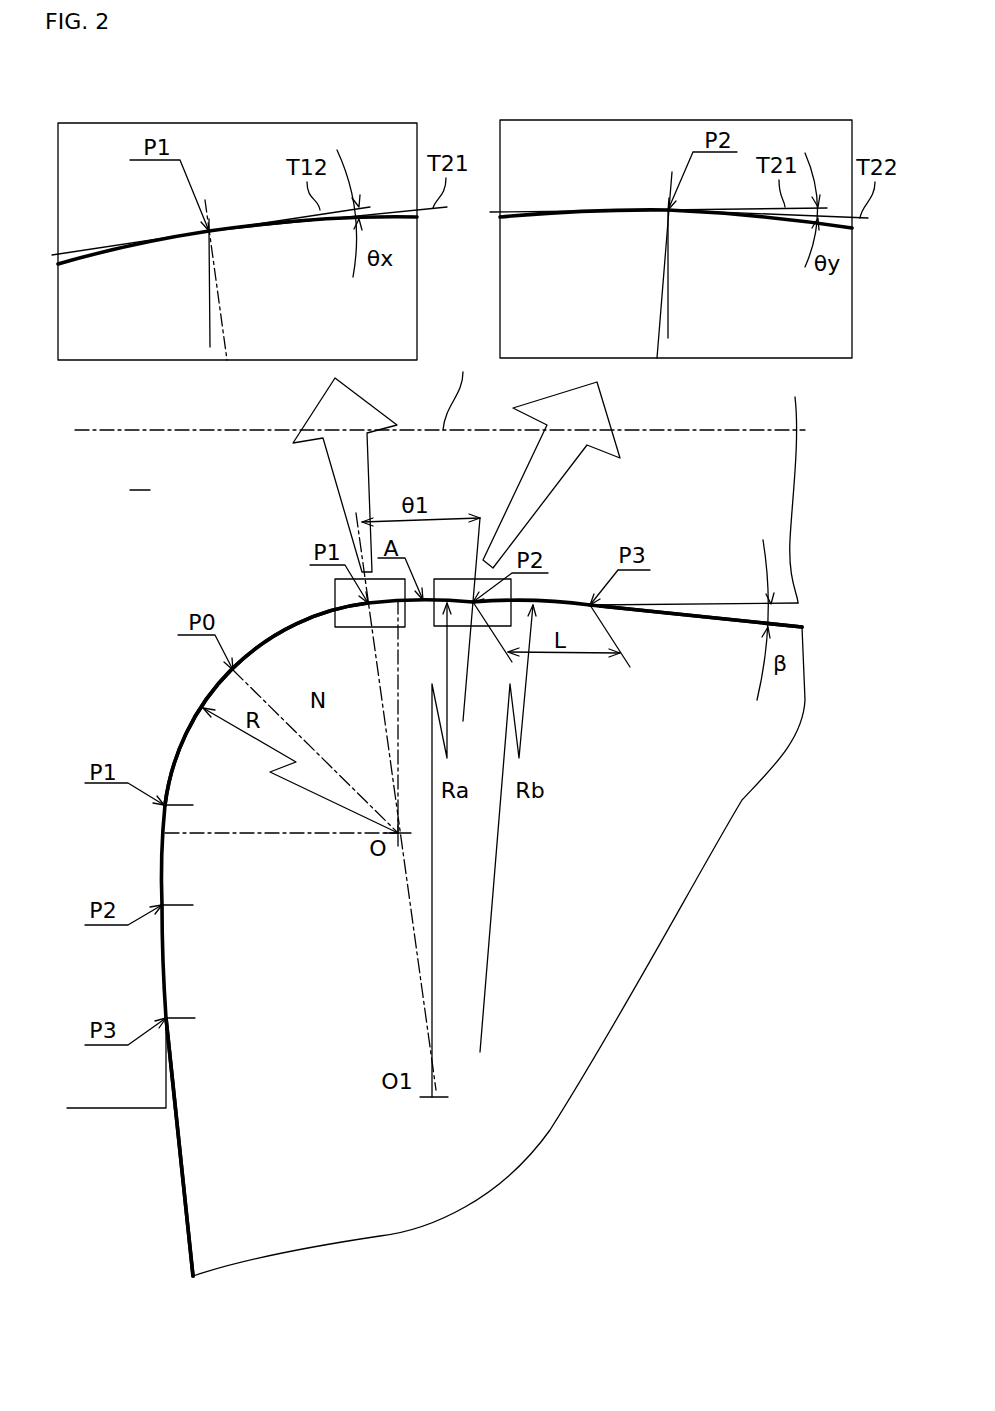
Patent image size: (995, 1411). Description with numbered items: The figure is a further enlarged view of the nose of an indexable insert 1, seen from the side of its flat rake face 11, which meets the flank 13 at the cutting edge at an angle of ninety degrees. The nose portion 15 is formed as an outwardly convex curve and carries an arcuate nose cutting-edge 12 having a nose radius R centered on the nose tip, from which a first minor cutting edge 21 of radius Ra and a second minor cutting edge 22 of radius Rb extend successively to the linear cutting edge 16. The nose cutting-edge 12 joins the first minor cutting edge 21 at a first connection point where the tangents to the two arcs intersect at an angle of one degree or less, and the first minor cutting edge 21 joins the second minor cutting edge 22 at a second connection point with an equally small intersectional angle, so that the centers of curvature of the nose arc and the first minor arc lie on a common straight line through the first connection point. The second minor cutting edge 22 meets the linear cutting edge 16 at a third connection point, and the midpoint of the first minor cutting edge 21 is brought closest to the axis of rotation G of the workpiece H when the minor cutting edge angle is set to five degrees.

The indexable insert 1 is at (565, 1062).
The rake face 11 is at (628, 970).
The nose cutting-edge 12 is at (150, 240).
The flank 13 is at (756, 620).
The nose portion 15 is at (203, 677).
The linear cutting edge 16 is at (717, 617).
The first minor cutting edge 21 is at (267, 225).
The second minor cutting edge 22 is at (735, 213).